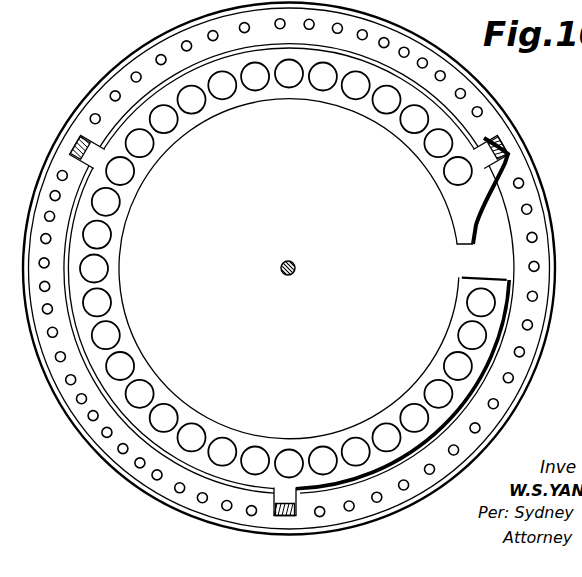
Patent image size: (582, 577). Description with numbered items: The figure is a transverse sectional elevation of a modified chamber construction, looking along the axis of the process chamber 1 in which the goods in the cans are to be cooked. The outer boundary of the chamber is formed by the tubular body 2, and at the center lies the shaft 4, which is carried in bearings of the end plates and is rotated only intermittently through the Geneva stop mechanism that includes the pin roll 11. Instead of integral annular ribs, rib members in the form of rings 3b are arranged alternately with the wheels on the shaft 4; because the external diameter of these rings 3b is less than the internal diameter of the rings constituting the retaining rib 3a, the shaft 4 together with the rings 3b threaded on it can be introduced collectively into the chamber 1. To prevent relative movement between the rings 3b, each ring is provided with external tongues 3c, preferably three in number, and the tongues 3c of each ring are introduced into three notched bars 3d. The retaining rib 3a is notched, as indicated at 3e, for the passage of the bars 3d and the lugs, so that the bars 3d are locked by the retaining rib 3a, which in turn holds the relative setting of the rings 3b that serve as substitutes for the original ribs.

The process chamber 1 is at (433, 46).
The pin roll 11 is at (289, 269).
The tubular body 2 is at (536, 356).
The retaining rib 3a is at (168, 45).
The ring 3b is at (170, 388).
The tongue 3c is at (93, 148).
The notched bar 3d is at (503, 145).
The notch 3e is at (82, 133).
The shaft 4 is at (287, 272).